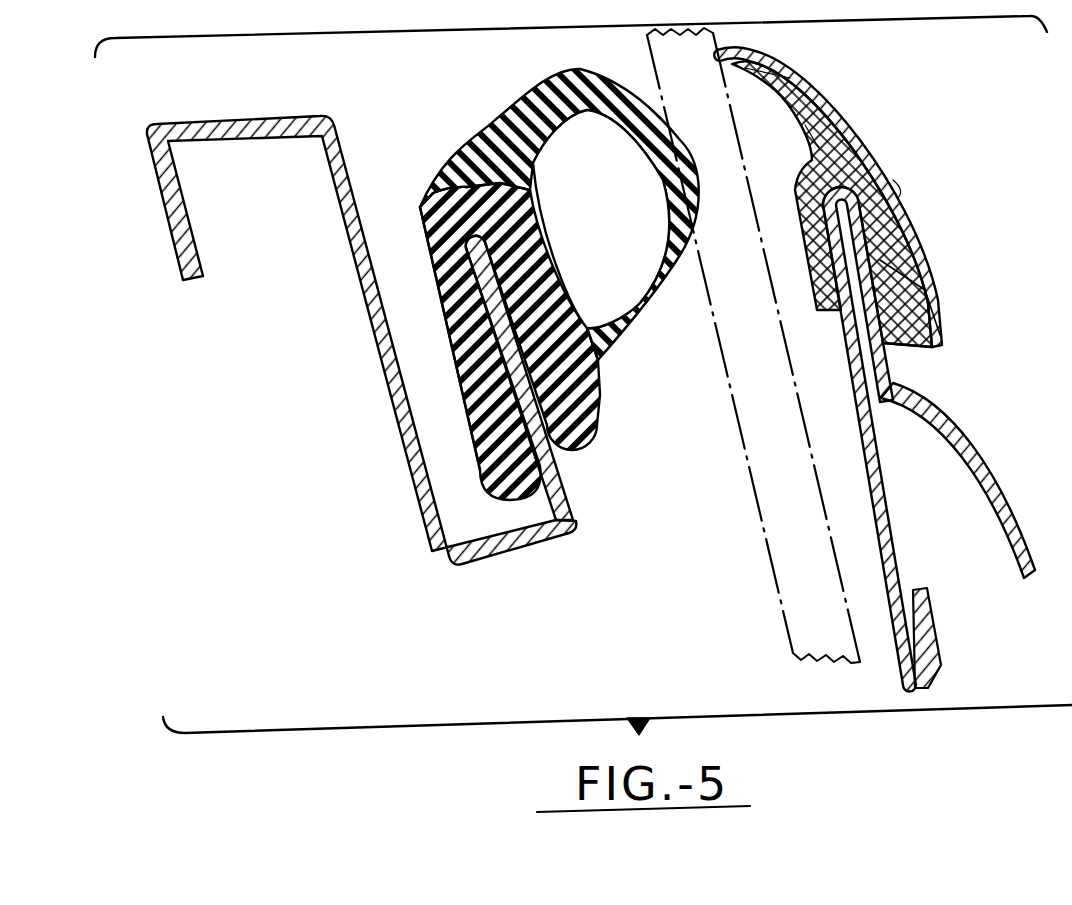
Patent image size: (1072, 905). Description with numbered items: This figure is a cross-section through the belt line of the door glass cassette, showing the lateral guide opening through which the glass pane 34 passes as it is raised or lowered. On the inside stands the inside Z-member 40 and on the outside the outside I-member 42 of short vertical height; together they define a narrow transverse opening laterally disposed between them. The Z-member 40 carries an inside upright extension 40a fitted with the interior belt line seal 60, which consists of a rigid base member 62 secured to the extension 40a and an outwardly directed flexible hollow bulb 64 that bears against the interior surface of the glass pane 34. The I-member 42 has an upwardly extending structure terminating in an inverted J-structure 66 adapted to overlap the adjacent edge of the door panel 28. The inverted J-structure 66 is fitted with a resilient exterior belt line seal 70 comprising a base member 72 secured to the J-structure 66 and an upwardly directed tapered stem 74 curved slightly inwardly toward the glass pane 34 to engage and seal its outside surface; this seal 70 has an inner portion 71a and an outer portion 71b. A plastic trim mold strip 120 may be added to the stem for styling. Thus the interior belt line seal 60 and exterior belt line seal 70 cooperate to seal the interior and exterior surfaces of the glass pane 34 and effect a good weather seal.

The door panel 28 is at (967, 447).
The glass pane 34 is at (780, 523).
The inside Z-member 40 is at (433, 547).
The inside upright extension 40a is at (565, 483).
The outside I-member 42 is at (893, 540).
The interior belt line seal 60 is at (482, 136).
The rigid base member 62 is at (470, 352).
The flexible hollow bulb 64 is at (531, 92).
The inverted J-structure 66 is at (937, 333).
The exterior belt line seal 70 is at (910, 217).
The inner portion 71a is at (808, 120).
The outer portion 71b is at (789, 68).
The base member 72 is at (900, 271).
The tapered stem 74 is at (842, 110).
The mold strip 120 is at (900, 186).